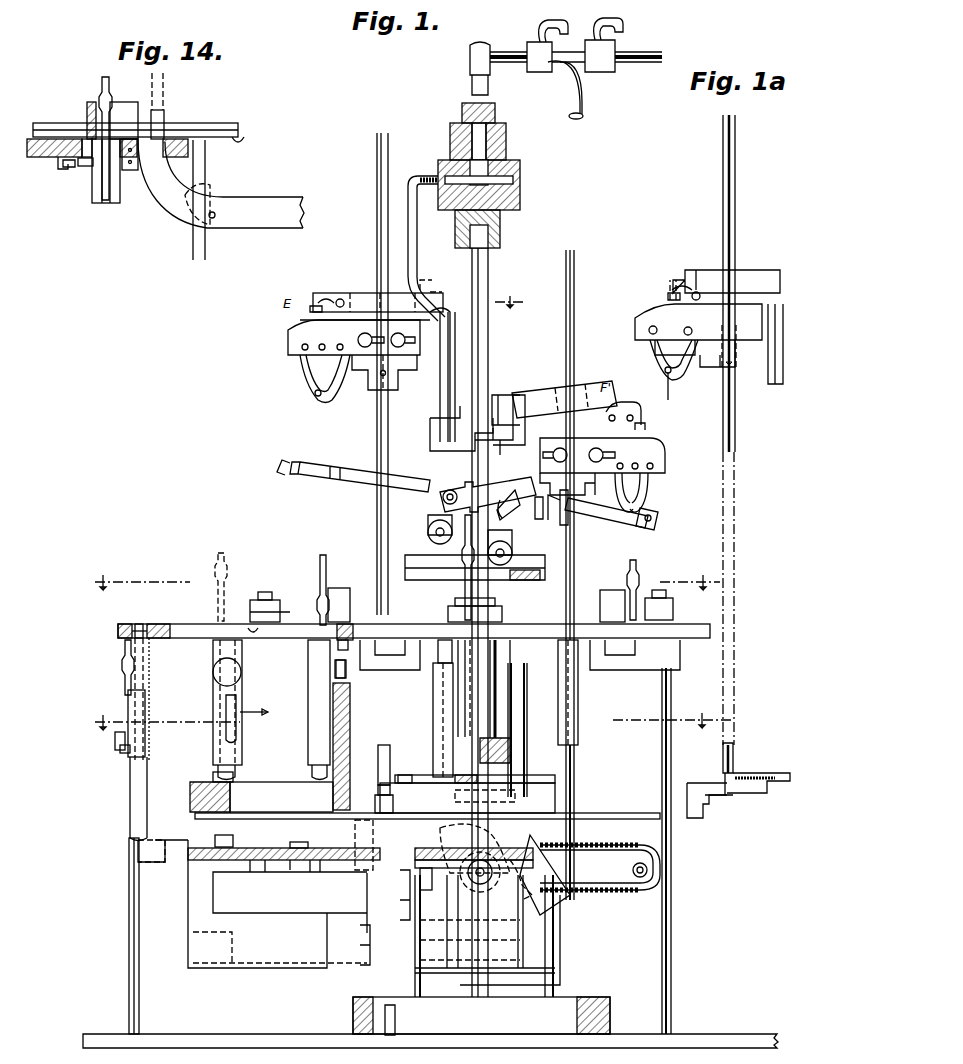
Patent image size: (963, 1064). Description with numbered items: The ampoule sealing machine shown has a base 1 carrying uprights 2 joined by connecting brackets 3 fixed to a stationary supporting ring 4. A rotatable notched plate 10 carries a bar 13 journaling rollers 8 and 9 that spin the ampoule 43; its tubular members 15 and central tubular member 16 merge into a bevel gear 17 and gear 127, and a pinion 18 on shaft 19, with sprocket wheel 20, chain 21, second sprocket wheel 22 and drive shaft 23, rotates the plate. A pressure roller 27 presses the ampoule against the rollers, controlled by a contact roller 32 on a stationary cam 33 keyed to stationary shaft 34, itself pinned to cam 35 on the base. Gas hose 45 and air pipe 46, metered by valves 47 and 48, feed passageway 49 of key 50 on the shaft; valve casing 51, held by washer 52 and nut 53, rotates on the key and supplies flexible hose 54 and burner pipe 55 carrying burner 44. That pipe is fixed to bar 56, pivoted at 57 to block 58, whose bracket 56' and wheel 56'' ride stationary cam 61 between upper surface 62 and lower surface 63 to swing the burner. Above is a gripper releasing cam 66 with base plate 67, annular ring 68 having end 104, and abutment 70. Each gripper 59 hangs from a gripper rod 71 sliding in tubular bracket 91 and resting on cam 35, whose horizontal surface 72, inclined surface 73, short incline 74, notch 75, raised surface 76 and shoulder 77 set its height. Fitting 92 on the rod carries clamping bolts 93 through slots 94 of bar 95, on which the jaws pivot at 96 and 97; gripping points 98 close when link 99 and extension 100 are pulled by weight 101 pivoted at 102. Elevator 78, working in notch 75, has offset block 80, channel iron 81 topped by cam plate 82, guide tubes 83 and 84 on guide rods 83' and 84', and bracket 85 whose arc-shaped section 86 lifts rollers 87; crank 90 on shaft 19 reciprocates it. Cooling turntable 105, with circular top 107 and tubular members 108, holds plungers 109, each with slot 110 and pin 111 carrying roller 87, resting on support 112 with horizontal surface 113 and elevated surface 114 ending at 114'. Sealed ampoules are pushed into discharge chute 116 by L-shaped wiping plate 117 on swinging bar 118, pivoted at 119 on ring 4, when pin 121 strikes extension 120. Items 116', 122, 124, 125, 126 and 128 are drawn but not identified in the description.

In FIG. 1, the base 1 is at (725, 1034).
In FIG. 1, the upright post 2 is at (662, 1012).
In FIG. 1, the frame bracket 3 is at (690, 655).
In FIG. 14, the bushing 4 is at (241, 135).
In FIG. 1, the bushing 4 is at (248, 616).
In FIG. 1, the block 8 is at (600, 605).
In FIG. 1, the block 9 is at (350, 600).
In FIG. 14, the table plate 10 is at (225, 128).
In FIG. 1, the table plate 10 is at (250, 620).
In FIG. 1, the section line 13 is at (520, 298).
In FIG. 1, the guide column 15 is at (433, 705).
In FIG. 1, the central sleeve 16 is at (510, 650).
In FIG. 1, the gear 17 is at (425, 848).
In FIG. 1, the gear 18 is at (462, 882).
In FIG. 1, the pinion 19 is at (468, 877).
In FIG. 1, the cam 20 is at (520, 880).
In FIG. 1, the chain 21 is at (620, 845).
In FIG. 1, the sprocket 22 is at (633, 866).
In FIG. 1, the sprocket shaft 23 is at (637, 872).
In FIG. 1, the clamp block 27 is at (262, 600).
In FIG. 1, the base plate 32 is at (448, 612).
In FIG. 1, the plate 33 is at (455, 602).
In FIG. 1, the central rod 34 is at (490, 270).
In FIG. 1A, the bracket 35 is at (700, 818).
In FIG. 1, the bracket 35 is at (375, 805).
In FIG. 14, the tube 43 is at (100, 90).
In FIG. 1, the tube 43 is at (465, 580).
In FIG. 1, the arm end 44 is at (285, 467).
In FIG. 1, the hose 45 is at (583, 108).
In FIG. 1, the supply pipe 46 is at (655, 50).
In FIG. 1, the valve 47 is at (530, 38).
In FIG. 1, the valve 48 is at (615, 48).
In FIG. 1, the valve body 49 is at (506, 135).
In FIG. 1, the valve seat 50 is at (500, 220).
In FIG. 1, the valve housing 51 is at (520, 193).
In FIG. 1, the gland 52 is at (450, 140).
In FIG. 1, the nut 53 is at (462, 108).
In FIG. 1, the pipe 54 is at (408, 236).
In FIG. 1, the arm 55 is at (360, 470).
In FIG. 1, the link 56 is at (511, 494).
In FIG. 1, the roller 56' is at (423, 529).
In FIG. 1, the roller 56'' is at (517, 547).
In FIG. 1, the pivot 57 is at (446, 490).
In FIG. 1, the lever 58 is at (480, 485).
In FIG. 1A, the gripper finger 59 is at (648, 352).
In FIG. 1, the gripper finger 59 is at (302, 370).
In FIG. 1, the block 61 is at (405, 570).
In FIG. 1, the block 62 is at (405, 560).
In FIG. 1, the pad 63 is at (525, 580).
In FIG. 1, the head block 66 is at (460, 435).
In FIG. 1, the pin 67 is at (500, 455).
In FIG. 1, the bracket 68 is at (498, 400).
In FIG. 1A, the bracket arm 70 is at (783, 370).
In FIG. 1, the bracket arm 70 is at (455, 368).
In FIG. 1A, the rod 71 is at (735, 245).
In FIG. 1, the rod 71 is at (377, 418).
In FIG. 1A, the stop 72 is at (748, 759).
In FIG. 1, the stop 72 is at (369, 785).
In FIG. 1, the rod 73 is at (582, 820).
In FIG. 1, the lever 74 is at (568, 918).
In FIG. 1, the pin 75 is at (420, 282).
In FIG. 1A, the guide 76 is at (780, 772).
In FIG. 1, the guide 76 is at (465, 775).
In FIG. 1A, the block 77 is at (730, 790).
In FIG. 1, the block 77 is at (378, 775).
In FIG. 1, the bar 78 is at (362, 820).
In FIG. 1, the support 80 is at (190, 798).
In FIG. 1, the cross head 81 is at (555, 798).
In FIG. 1, the plate 82 is at (540, 775).
In FIG. 1, the rod 83 is at (530, 730).
In FIG. 1, the rod 83' is at (436, 936).
In FIG. 1, the rod 84 is at (441, 688).
In FIG. 1, the rod 84' is at (536, 936).
In FIG. 1, the post 85 is at (350, 740).
In FIG. 1, the nut 86 is at (346, 683).
In FIG. 1, the clamp 87 is at (352, 672).
In FIG. 1, the cam 90 is at (475, 847).
In FIG. 1, the pin 91 is at (568, 520).
In FIG. 1, the bracket 92 is at (370, 389).
In FIG. 1, the nut 93 is at (413, 344).
In FIG. 1, the pin 94 is at (375, 362).
In FIG. 1A, the gripper head 95 is at (655, 310).
In FIG. 1, the gripper head 95 is at (288, 340).
In FIG. 1A, the screw 96 is at (690, 327).
In FIG. 1, the screw 96 is at (300, 347).
In FIG. 1A, the screw 97 is at (653, 326).
In FIG. 1, the screw 97 is at (360, 333).
In FIG. 1A, the pin 98 is at (668, 380).
In FIG. 1, the pin 98 is at (318, 396).
In FIG. 1A, the hinge 99 is at (668, 300).
In FIG. 1, the hinge 99 is at (310, 312).
In FIG. 1A, the pin 100 is at (675, 280).
In FIG. 1, the pin 100 is at (322, 300).
In FIG. 1A, the plate 101 is at (770, 282).
In FIG. 1, the plate 101 is at (340, 293).
In FIG. 1A, the pin 102 is at (696, 282).
In FIG. 1, the pin 102 is at (340, 298).
In FIG. 1, the block 104 is at (525, 435).
In FIG. 14, the plate 105 is at (50, 157).
In FIG. 1, the plate 105 is at (118, 631).
In FIG. 1, the frame 107 is at (195, 622).
In FIG. 1, the sleeve 108 is at (213, 660).
In FIG. 14, the tube 109 is at (104, 203).
In FIG. 1, the tube 109 is at (218, 770).
In FIG. 1, the slide 110 is at (226, 712).
In FIG. 1, the screw 111 is at (125, 753).
In FIG. 1, the frame 112 is at (129, 920).
In FIG. 1, the housing 113 is at (170, 842).
In FIG. 1, the block 114 is at (281, 786).
In FIG. 1, the block 114' is at (246, 770).
In FIG. 14, the elbow pipe 116 is at (221, 190).
In FIG. 14, the pipe 116' is at (177, 106).
In FIG. 14, the block 117 is at (124, 110).
In FIG. 14, the plate 118 is at (134, 170).
In FIG. 1, the plate 118 is at (337, 648).
In FIG. 14, the screw 119 is at (85, 166).
In FIG. 14, the nut 120 is at (70, 167).
In FIG. 14, the bracket 121 is at (52, 170).
In FIG. 1, the bracket 121 is at (357, 651).
In FIG. 1, the block 122 is at (209, 840).
In FIG. 1, the rack 124 is at (255, 848).
In FIG. 1, the pad 125 is at (296, 836).
In FIG. 1, the guide 126 is at (372, 830).
In FIG. 1, the pin 127 is at (410, 880).
In FIG. 1, the rod 128 is at (140, 624).